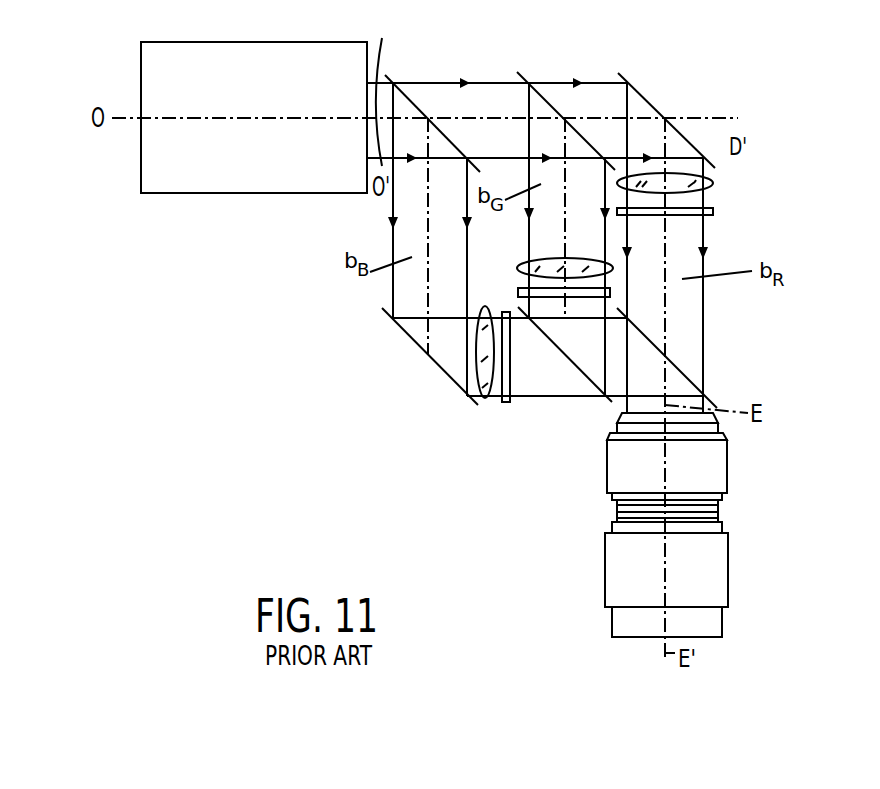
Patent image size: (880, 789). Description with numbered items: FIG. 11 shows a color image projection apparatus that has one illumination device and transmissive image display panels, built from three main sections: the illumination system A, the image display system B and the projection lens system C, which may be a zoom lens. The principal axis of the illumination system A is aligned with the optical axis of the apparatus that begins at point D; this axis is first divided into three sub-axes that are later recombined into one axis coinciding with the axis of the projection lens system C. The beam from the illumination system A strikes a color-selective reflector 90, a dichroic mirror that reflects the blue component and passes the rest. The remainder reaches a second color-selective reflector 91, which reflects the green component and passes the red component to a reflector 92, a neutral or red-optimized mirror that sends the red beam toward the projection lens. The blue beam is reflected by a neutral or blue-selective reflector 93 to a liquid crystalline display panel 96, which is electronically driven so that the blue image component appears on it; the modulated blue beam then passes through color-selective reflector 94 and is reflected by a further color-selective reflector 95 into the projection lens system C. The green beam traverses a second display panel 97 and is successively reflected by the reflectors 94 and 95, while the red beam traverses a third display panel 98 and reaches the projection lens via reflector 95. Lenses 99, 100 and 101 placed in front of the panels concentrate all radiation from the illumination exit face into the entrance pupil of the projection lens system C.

The color-selective reflector 90 is at (416, 101).
The second color-selective reflector 91 is at (548, 101).
The reflector 92 is at (645, 100).
The reflector 93 is at (440, 366).
The color-selective reflector 94 is at (591, 384).
The color-selective reflector 95 is at (690, 382).
The display panel 96 is at (507, 402).
The second display panel 97 is at (518, 290).
The third display panel 98 is at (713, 212).
The lens 99 is at (487, 400).
The lens 100 is at (524, 262).
The lens 101 is at (713, 183).
The illumination system A is at (246, 32).
The image display system B is at (514, 34).
The projection lens system C is at (768, 525).
The optical axis D is at (380, 87).